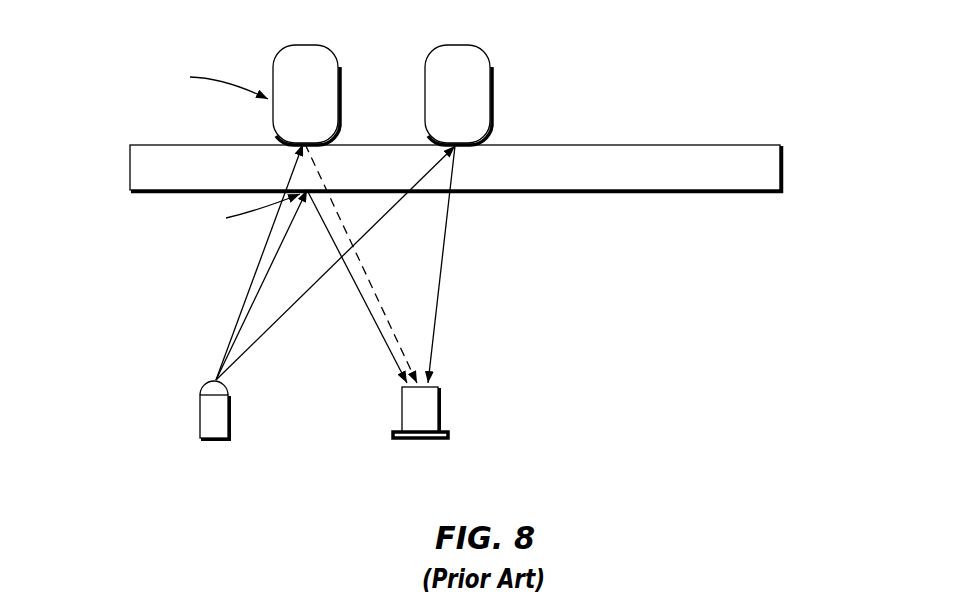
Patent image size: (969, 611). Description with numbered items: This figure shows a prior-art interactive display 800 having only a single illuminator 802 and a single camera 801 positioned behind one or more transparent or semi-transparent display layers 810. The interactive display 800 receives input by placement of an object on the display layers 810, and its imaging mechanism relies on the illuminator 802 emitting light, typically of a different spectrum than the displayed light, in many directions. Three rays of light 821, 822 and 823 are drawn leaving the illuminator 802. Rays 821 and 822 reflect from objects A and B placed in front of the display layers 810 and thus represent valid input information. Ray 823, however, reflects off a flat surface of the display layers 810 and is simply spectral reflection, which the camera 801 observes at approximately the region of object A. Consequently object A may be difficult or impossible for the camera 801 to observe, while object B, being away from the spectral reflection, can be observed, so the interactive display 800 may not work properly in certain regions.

The interactive display 800 is at (637, 75).
The display layers 810 is at (780, 163).
The ray of light 821 is at (255, 271).
The ray of light 822 is at (300, 302).
The ray of light 823 is at (262, 284).
The illuminator 802 is at (200, 412).
The camera 801 is at (402, 412).